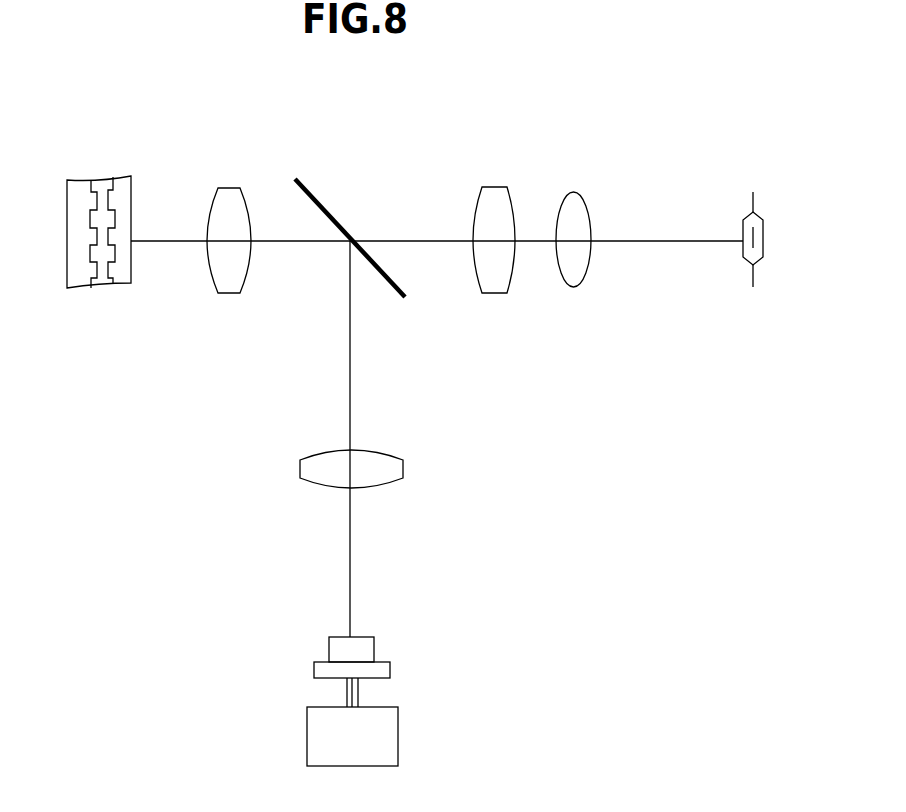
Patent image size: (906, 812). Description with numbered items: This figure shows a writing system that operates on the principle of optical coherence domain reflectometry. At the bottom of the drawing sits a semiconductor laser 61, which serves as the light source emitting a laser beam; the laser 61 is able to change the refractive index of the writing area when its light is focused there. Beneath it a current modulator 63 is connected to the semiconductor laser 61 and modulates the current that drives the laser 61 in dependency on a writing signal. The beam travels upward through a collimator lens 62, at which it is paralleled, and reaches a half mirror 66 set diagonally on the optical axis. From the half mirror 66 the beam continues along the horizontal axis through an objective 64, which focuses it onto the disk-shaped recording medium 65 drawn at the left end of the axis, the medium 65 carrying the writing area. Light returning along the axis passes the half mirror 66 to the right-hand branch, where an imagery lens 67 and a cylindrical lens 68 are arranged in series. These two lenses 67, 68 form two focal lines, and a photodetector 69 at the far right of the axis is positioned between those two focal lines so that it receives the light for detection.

The semiconductor laser 61 is at (370, 643).
The collimator lens 62 is at (392, 468).
The current modulator 63 is at (390, 737).
The objective 64 is at (232, 193).
The optical disk 65 is at (118, 197).
The half mirror 66 is at (333, 213).
The imagery lens 67 is at (490, 192).
The cylindrical lens 68 is at (578, 222).
The photodetector 69 is at (750, 212).